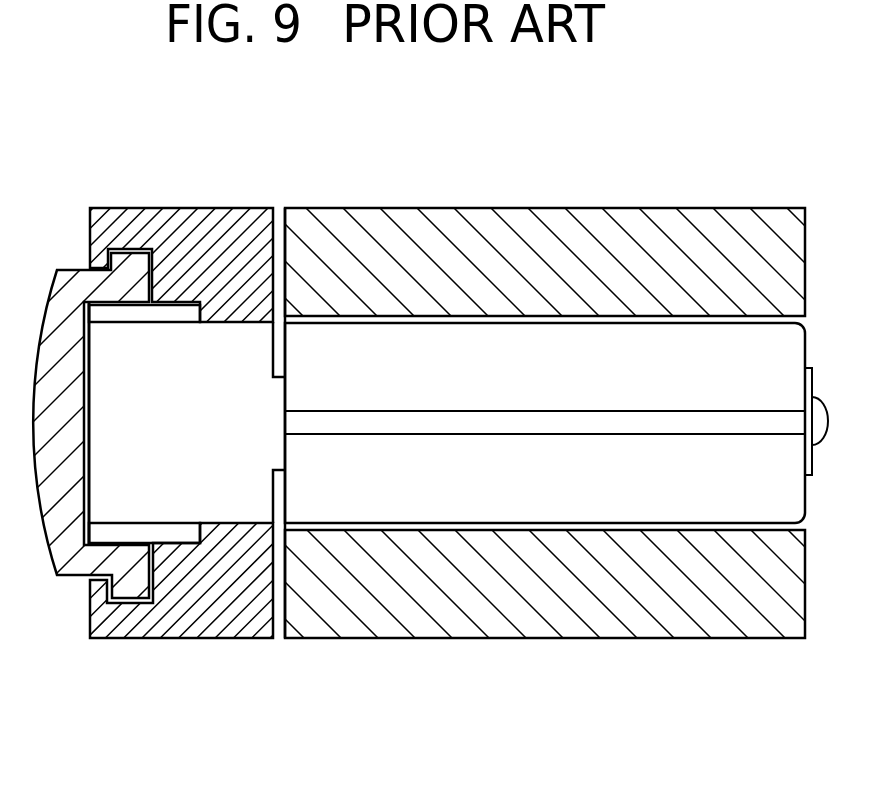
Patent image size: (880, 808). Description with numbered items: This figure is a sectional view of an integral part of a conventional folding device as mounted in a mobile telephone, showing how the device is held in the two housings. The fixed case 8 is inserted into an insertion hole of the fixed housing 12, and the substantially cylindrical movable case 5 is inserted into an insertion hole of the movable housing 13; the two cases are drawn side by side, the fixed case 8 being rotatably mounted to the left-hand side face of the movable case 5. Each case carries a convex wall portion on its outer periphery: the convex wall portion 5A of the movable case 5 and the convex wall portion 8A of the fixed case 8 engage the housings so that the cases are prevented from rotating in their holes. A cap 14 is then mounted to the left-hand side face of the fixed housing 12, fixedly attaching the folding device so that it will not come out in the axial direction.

The movable case 5 is at (506, 503).
The convex wall portion 5A is at (609, 420).
The fixed case 8 is at (245, 490).
The convex wall portion 8A is at (173, 532).
The fixed housing 12 is at (203, 220).
The movable housing 13 is at (551, 215).
The cap 14 is at (72, 270).